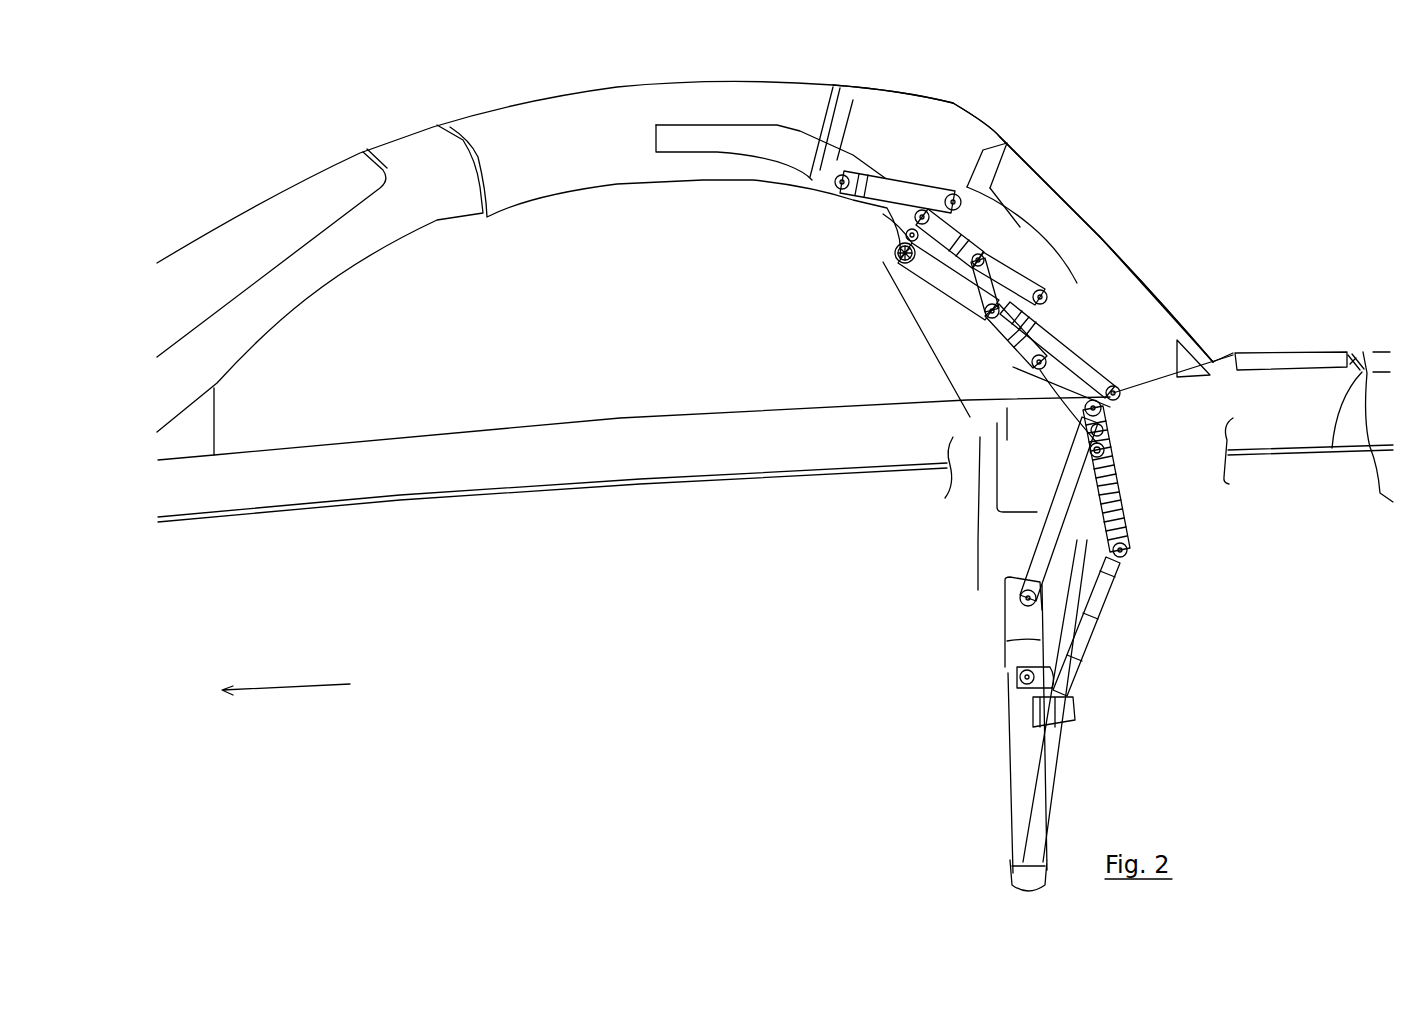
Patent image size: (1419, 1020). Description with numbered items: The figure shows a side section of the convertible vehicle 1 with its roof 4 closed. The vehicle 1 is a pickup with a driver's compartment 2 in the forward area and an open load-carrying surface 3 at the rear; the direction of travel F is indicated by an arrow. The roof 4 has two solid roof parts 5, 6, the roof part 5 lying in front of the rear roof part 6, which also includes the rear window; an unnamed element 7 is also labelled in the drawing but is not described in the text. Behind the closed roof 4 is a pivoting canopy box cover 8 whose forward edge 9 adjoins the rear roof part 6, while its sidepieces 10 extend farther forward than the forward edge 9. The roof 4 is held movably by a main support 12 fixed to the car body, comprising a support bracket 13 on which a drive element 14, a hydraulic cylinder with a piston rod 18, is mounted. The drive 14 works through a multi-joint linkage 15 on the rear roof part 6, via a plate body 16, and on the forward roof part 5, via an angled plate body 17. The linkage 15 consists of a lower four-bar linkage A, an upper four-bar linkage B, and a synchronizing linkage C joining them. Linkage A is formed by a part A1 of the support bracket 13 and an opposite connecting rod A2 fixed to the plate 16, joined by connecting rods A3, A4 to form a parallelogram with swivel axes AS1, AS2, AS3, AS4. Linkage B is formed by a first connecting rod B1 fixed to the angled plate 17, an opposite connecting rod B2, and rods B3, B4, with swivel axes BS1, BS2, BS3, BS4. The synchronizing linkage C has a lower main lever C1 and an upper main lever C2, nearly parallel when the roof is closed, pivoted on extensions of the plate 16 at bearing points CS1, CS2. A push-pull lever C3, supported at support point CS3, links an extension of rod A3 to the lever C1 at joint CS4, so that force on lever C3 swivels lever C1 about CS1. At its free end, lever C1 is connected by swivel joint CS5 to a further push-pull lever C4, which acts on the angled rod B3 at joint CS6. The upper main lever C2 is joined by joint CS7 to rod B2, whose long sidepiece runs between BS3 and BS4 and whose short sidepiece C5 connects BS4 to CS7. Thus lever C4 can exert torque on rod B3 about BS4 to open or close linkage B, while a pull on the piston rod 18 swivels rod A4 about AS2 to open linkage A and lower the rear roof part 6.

The convertible vehicle 1 is at (1263, 153).
The driver's compartment 2 is at (377, 405).
The load-carrying surface 3 is at (1386, 332).
The roof 4 is at (947, 82).
The roof part 5 is at (573, 143).
The roof part 6 is at (957, 126).
The rear window part 7 is at (1080, 242).
The canopy box cover 8 is at (1290, 352).
The forward edge 9 is at (1227, 340).
The sidepieces 10 is at (973, 483).
The main support 12 is at (1098, 680).
The support bracket 13 is at (1018, 757).
The drive element 14 is at (1055, 758).
The multi-joint linkage 15 is at (1157, 290).
The plate body 16 is at (1048, 322).
The angled plate body 17 is at (726, 113).
The piston rod 18 is at (1090, 600).
The lower four-bar linkage A is at (1164, 505).
The part of the support bracket A1 is at (1012, 645).
The connecting rod A2 is at (1103, 430).
The connecting rod A3 is at (1126, 570).
The connecting rod A4 is at (1068, 510).
The swivel axis AS1 is at (1018, 678).
The swivel axis AS2 is at (1018, 593).
The swivel axis AS3 is at (1128, 548).
The swivel axis AS4 is at (1103, 414).
The upper four-bar linkage B is at (913, 160).
The first connecting rod B1 is at (812, 138).
The connecting rod B2 is at (927, 278).
The angled rod B3 is at (888, 222).
The rod B4 is at (958, 230).
The swivel axis BS1 is at (847, 175).
The swivel axis BS2 is at (955, 196).
The swivel joint BS3 is at (992, 318).
The swivel joint BS4 is at (900, 265).
The synchronizing linkage C is at (1073, 212).
The lower main lever C1 is at (1118, 350).
The upper main lever C2 is at (1041, 267).
The push-pull lever C3 is at (1045, 437).
The push-pull lever C4 is at (985, 196).
The short sidepiece C5 is at (900, 260).
The bearing point CS1 is at (1122, 383).
The bearing point CS2 is at (1075, 283).
The support point CS3 is at (1104, 450).
The joint CS4 is at (1040, 372).
The swivel joint CS5 is at (1030, 233).
The joint CS6 is at (903, 238).
The swivel joint CS7 is at (897, 252).
The direction of travel F is at (275, 688).